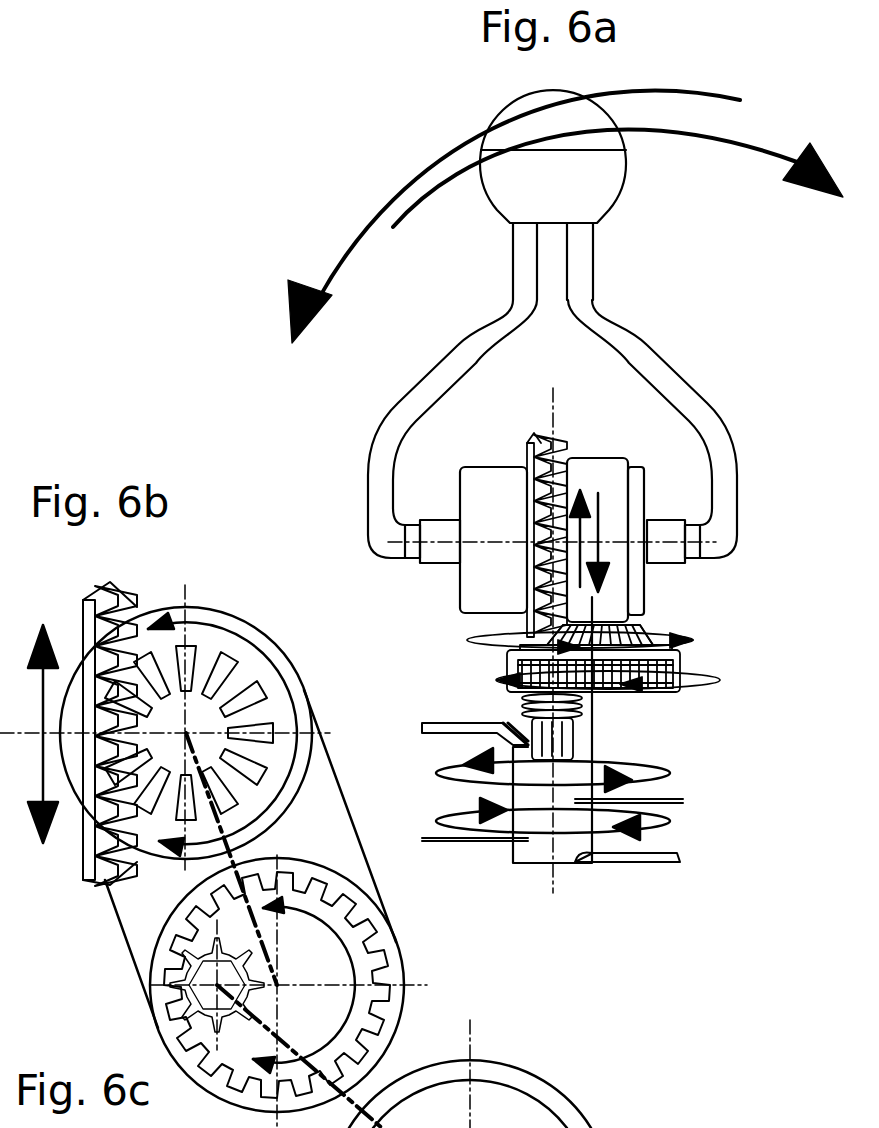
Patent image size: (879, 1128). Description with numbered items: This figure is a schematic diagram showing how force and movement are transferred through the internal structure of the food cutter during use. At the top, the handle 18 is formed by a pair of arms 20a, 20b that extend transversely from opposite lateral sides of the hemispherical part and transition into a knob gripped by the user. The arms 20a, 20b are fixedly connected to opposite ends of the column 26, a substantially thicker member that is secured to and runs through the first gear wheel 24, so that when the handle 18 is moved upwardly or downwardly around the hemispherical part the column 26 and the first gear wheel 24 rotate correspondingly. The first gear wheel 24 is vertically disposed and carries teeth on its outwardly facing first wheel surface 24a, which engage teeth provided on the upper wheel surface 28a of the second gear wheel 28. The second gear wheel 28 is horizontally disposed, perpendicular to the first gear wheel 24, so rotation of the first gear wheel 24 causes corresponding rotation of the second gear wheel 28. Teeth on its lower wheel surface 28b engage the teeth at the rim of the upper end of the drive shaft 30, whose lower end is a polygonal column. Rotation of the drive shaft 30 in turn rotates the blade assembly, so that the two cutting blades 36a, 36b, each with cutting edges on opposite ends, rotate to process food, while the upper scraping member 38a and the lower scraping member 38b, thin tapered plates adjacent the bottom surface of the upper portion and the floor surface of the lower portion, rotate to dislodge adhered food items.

The handle 18 is at (677, 148).
The arm 20a is at (398, 403).
The arm 20b is at (693, 415).
The first gear wheel 24 is at (462, 468).
The first wheel surface 24a is at (576, 453).
The column 26 is at (617, 480).
The second gear wheel 28 is at (745, 617).
The upper wheel surface 28a is at (661, 634).
The lower wheel surface 28b is at (672, 708).
The drive shaft 30 is at (592, 723).
The cutting blade 36a is at (687, 800).
The cutting blade 36b is at (453, 842).
The upper scraping member 38a is at (438, 720).
The lower scraping member 38b is at (680, 860).